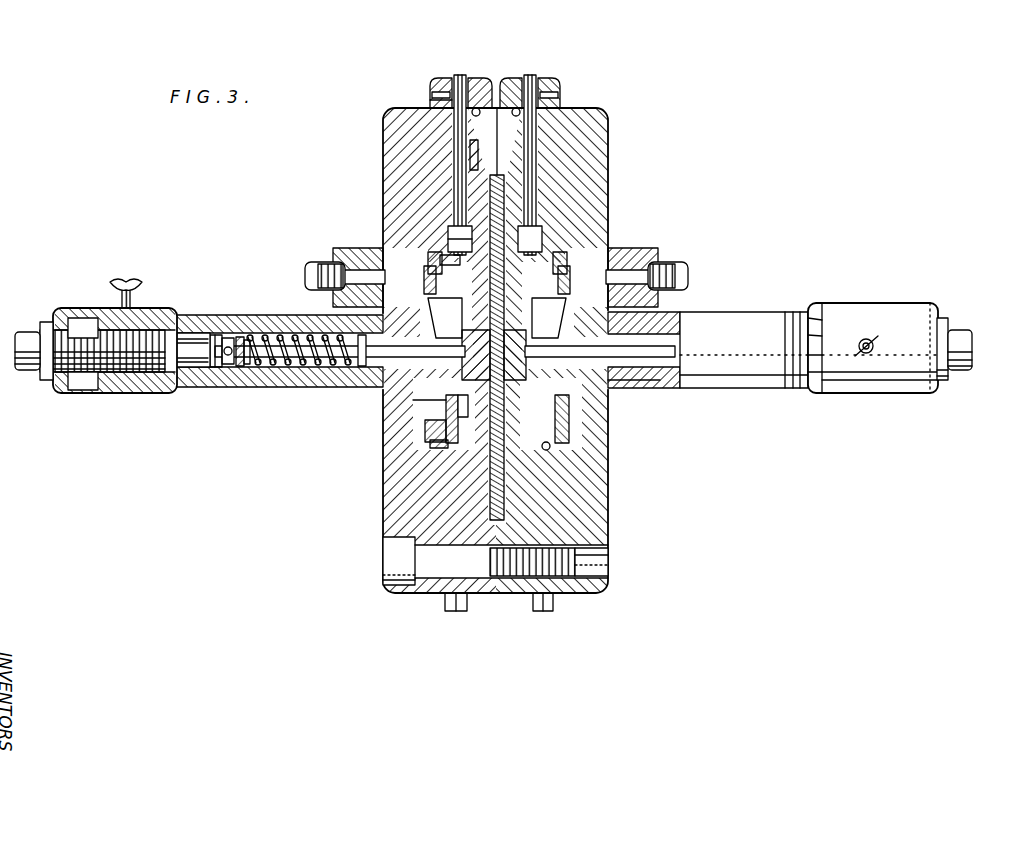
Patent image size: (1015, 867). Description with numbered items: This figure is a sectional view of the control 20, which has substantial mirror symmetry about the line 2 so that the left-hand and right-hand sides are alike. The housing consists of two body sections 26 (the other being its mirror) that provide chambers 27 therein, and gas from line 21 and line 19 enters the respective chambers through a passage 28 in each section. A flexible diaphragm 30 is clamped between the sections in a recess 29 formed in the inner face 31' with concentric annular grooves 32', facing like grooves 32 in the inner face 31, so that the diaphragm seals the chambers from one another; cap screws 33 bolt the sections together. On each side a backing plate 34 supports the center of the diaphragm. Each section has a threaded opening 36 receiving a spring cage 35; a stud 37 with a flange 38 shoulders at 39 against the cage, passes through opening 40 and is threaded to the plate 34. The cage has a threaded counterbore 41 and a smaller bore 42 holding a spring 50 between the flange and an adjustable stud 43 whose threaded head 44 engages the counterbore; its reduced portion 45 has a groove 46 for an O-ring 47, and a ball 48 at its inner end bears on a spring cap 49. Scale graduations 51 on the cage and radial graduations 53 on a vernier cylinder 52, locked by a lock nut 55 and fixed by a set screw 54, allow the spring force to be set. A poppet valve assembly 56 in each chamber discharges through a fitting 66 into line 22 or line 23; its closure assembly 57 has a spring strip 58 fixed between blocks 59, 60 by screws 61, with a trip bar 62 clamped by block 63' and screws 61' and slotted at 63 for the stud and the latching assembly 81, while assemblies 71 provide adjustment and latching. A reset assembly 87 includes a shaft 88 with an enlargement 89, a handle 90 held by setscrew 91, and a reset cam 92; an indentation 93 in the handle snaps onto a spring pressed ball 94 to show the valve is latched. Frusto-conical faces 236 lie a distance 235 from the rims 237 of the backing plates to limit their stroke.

The line 2— 2 is at (500, 5).
The line 19 is at (553, 602).
The control 20 is at (590, 100).
The line 21 is at (445, 602).
The discharge line 22 is at (315, 262).
The discharge line 23 is at (670, 262).
The housing section 26 is at (607, 130).
The chamber 27 is at (501, 376).
The passage 28 is at (383, 530).
The recess 29 is at (505, 512).
The flexible diaphragm 30 is at (500, 440).
The inner face 31 is at (531, 165).
The inner face 31' is at (484, 153).
The concentric annular grooves 32 is at (510, 347).
The concentric annular grooves 32' is at (478, 521).
The cap screws 33 is at (383, 562).
The backing plate 34 is at (448, 431).
The spring cage 35 is at (268, 312).
The threaded opening 36 is at (395, 400).
The stud 37 is at (350, 360).
The flange 38 is at (360, 337).
The shoulder 39 is at (360, 370).
The opening 40 is at (370, 372).
The threaded counterbore 41 is at (175, 385).
The bore 42 is at (258, 337).
The adjustable stud 43 is at (28, 332).
The threaded head 44 is at (82, 330).
The reduced portion 45 is at (188, 340).
The groove 46 is at (214, 370).
The sealing O-ring 47 is at (215, 335).
The ball 48 is at (228, 370).
The spring cap 49 is at (240, 337).
The spring 50 is at (298, 370).
The scale graduations 51 is at (775, 360).
The vernier cylinder 52 is at (110, 397).
The radial graduations 53 is at (828, 322).
The set screw 54 is at (126, 280).
The lock nut 55 is at (44, 380).
The poppet valve assembly 56 is at (432, 255).
The closure assembly 57 is at (553, 409).
The spring strip 58 is at (430, 443).
The block 59 is at (403, 464).
The block 60 is at (460, 450).
The screws 61 is at (458, 419).
The screws 61' is at (457, 398).
The trip bar 62 is at (419, 401).
The slot 63 is at (634, 394).
The block 63' is at (415, 402).
The fitting 66 is at (358, 248).
The adjusting and latching assembly 71 is at (497, 278).
The latching assembly 81 is at (497, 318).
The reset assembly 87 is at (432, 80).
The shaft 88 is at (454, 168).
The enlargement 89 is at (494, 236).
The handle 90 is at (470, 100).
The setscrew 91 is at (430, 100).
The reset cam 92 is at (445, 256).
The hemispherical indentation 93 is at (500, 95).
The spring pressed ball 94 is at (497, 108).
The distance 235 is at (490, 480).
The frusto-conical faces 236 is at (455, 460).
The rims 237 is at (465, 485).